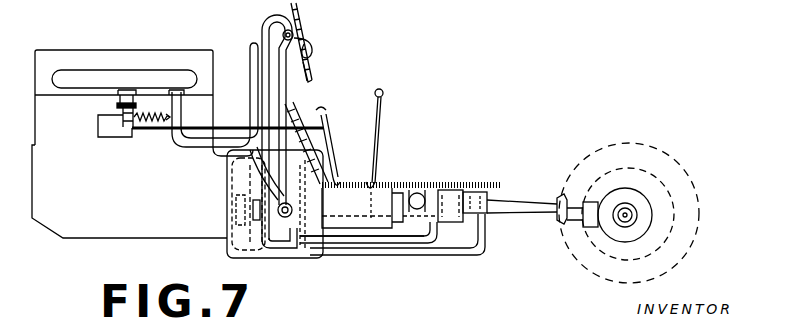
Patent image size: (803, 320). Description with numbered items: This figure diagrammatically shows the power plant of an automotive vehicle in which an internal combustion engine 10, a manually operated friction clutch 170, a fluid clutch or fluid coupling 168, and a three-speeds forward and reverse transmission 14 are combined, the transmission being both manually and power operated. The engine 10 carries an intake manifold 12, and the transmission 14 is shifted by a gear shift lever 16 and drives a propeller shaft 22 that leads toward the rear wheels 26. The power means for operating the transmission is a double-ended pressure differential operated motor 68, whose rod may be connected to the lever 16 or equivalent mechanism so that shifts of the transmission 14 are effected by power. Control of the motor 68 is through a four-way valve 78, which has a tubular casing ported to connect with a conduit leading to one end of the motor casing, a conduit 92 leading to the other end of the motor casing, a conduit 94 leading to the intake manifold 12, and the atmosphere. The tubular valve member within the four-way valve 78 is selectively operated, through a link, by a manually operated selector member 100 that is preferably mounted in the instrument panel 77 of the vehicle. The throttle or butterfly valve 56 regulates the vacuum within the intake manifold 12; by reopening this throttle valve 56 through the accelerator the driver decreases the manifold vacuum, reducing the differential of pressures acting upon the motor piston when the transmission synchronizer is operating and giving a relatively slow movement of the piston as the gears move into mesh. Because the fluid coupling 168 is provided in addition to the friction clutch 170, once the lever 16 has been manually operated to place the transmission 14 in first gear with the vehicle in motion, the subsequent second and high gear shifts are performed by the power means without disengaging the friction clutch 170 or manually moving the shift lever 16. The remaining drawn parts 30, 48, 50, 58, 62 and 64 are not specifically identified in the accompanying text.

The internal combustion engine 10 is at (62, 217).
The intake manifold 12 is at (68, 80).
The three-speeds forward and reverse transmission 14 is at (348, 203).
The gear shift lever 16 is at (380, 145).
The propeller shaft 22 is at (513, 207).
The rear wheels 26 is at (660, 168).
The conduit 30 is at (383, 240).
The lever 48 is at (330, 137).
The pivot 50 is at (320, 110).
The throttle valve 56 is at (112, 115).
The housing 58 is at (107, 133).
The spring 62 is at (143, 112).
The link arm 64 is at (283, 103).
The pressure differential operated motor 68 is at (480, 220).
The instrument panel 77 is at (312, 72).
The four-way valve 78 is at (300, 32).
The conduit 92 is at (420, 252).
The conduit 94 is at (252, 50).
The selector member 100 is at (312, 45).
The fluid coupling 168 is at (240, 180).
The friction clutch 170 is at (293, 253).